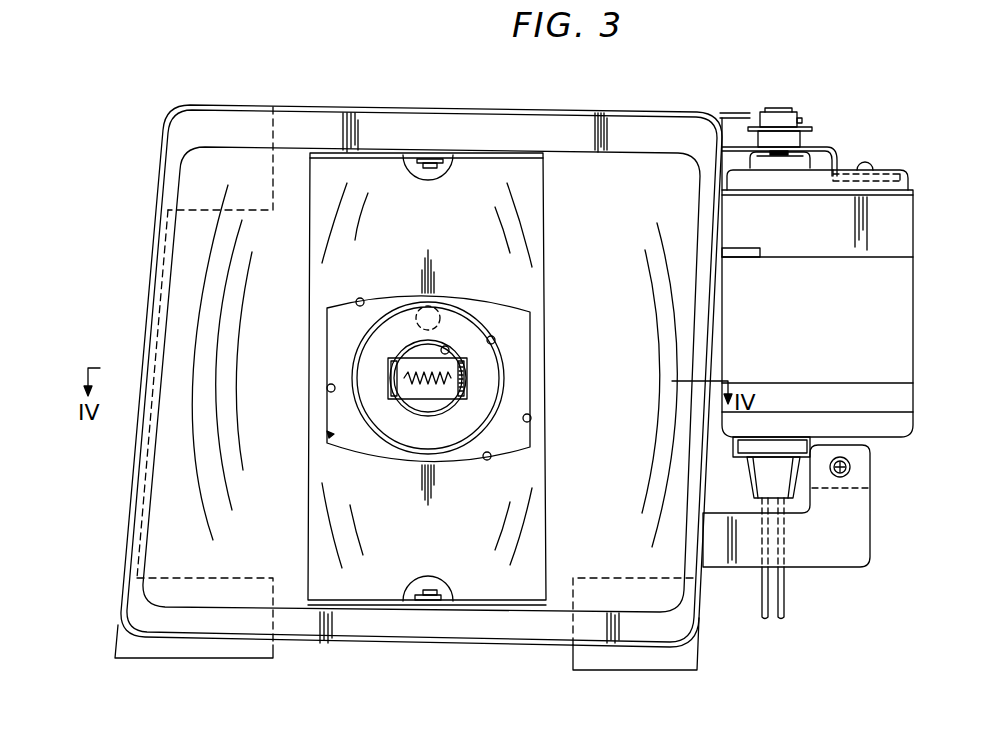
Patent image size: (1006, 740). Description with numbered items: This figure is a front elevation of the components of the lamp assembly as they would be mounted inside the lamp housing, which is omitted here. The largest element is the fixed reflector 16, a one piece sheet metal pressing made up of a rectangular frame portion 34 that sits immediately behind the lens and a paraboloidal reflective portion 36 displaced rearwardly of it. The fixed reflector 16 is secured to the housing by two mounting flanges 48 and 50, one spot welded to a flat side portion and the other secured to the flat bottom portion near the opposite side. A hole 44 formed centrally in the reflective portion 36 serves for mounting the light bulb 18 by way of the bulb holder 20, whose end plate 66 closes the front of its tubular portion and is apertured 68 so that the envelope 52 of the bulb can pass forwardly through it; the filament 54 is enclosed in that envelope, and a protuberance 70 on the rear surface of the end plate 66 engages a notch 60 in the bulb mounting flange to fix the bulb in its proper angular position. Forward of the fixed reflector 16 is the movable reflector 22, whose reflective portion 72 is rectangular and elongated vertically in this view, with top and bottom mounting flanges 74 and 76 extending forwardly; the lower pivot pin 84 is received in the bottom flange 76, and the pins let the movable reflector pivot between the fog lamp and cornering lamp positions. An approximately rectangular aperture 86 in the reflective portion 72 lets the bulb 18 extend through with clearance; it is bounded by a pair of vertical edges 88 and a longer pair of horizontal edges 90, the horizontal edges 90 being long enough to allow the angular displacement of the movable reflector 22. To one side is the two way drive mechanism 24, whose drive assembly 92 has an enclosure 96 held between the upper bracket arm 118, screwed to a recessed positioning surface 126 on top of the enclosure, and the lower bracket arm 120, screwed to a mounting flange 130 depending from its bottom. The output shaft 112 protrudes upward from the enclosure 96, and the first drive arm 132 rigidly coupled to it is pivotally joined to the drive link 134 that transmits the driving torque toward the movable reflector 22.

The fixed reflector 16 is at (390, 106).
The rectangular frame portion 34 is at (545, 126).
The reflective portion 36 is at (628, 186).
The mounting flange 48 is at (274, 132).
The mounting flange 50 is at (612, 578).
The movable reflector 22 is at (552, 192).
The reflective portion 72 is at (545, 232).
The mounting flange 74 is at (478, 152).
The pivot pin 84 is at (428, 590).
The mounting flange 76 is at (490, 608).
The light bulb 18 is at (401, 357).
The bulb holder 20 is at (501, 361).
The end plate 66 is at (493, 386).
The hole 44 is at (493, 340).
The aperture 68 is at (455, 342).
The horizontal edges 90 is at (358, 300).
The vertical edges 88 is at (330, 388).
The aperture 86 is at (329, 434).
The envelope 52 is at (443, 410).
The filament 54 is at (417, 400).
The notch 60 is at (418, 300).
The protuberance 70 is at (437, 300).
The two way drive mechanism 24 is at (877, 142).
The drive assembly 92 is at (915, 277).
The enclosure 96 is at (912, 228).
The recessed positioning surface 126 is at (896, 170).
The output shaft 112 is at (778, 167).
The first drive arm 132 is at (800, 130).
The drive link 134 is at (730, 112).
The upper bracket arm 118 is at (818, 150).
The mounting flange 130 is at (865, 440).
The lower bracket arm 120 is at (870, 530).